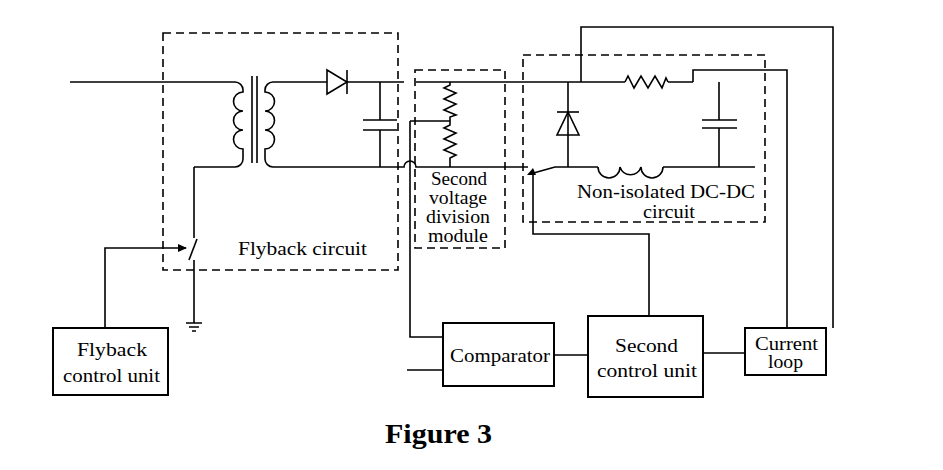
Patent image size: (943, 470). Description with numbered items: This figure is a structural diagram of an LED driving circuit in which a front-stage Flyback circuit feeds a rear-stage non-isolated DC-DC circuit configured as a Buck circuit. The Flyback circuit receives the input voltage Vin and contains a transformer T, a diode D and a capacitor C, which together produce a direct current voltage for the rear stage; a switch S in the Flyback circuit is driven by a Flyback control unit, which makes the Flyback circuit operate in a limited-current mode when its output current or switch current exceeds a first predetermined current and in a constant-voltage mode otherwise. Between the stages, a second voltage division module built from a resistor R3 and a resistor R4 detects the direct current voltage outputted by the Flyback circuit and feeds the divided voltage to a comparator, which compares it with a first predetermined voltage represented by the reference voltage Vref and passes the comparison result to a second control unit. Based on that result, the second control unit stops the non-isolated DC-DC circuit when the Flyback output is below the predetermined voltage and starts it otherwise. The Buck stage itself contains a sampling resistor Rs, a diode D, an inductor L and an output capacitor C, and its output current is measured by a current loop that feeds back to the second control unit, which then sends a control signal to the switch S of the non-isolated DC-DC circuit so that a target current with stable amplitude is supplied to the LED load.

The transformer T is at (234, 107).
The diode D is at (461, 106).
The capacitor C is at (551, 124).
The resistor R3 is at (464, 101).
The resistor R4 is at (464, 144).
The sampling resistor Rs is at (646, 93).
The inductor L is at (630, 159).
The switch S is at (372, 201).
The input voltage Vin is at (152, 103).
The reference voltage Vref is at (405, 360).